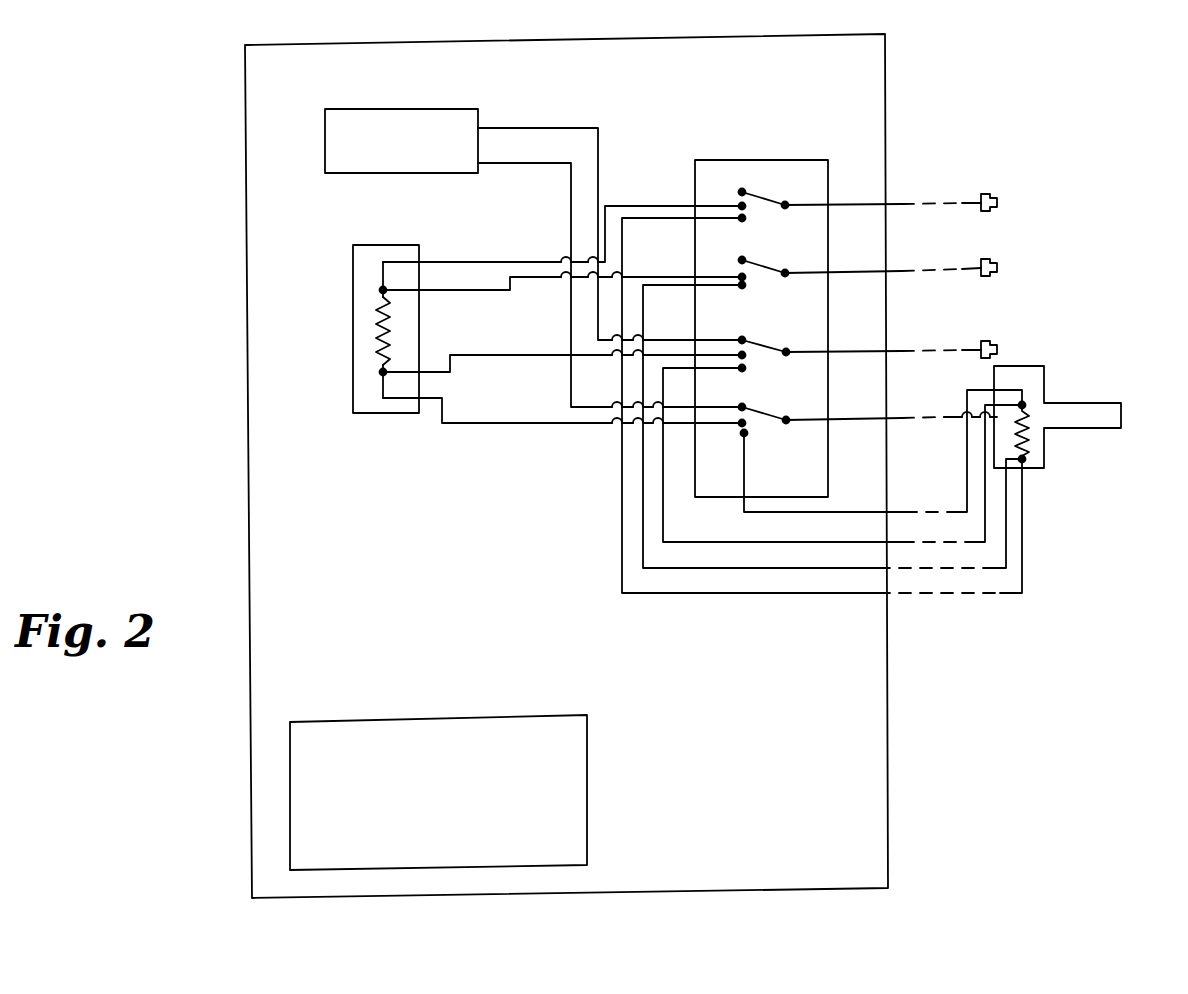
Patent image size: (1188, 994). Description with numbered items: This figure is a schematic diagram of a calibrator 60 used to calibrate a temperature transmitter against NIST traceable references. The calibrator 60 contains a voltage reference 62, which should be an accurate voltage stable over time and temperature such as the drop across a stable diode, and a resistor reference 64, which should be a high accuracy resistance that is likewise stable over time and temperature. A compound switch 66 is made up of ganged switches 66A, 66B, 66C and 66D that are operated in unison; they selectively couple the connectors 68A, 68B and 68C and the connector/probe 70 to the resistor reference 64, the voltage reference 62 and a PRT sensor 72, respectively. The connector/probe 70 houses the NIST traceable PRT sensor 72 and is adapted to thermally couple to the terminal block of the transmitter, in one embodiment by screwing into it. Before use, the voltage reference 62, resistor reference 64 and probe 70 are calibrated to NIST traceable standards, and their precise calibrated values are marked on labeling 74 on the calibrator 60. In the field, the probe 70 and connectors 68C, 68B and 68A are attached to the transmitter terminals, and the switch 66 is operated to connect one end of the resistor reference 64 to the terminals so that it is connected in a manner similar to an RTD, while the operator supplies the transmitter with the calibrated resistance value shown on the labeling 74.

The calibrator 60 is at (644, 466).
The voltage reference 62 is at (401, 120).
The resistor reference 64 is at (341, 329).
The compound switch 66 is at (761, 293).
The ganged switch 66A is at (782, 195).
The ganged switch 66B is at (779, 254).
The ganged switch 66C is at (787, 333).
The ganged switch 66D is at (785, 402).
The connector 68A is at (977, 170).
The connector 68B is at (1025, 244).
The connector 68C is at (1026, 323).
The connector/probe 70 is at (1057, 395).
The PRT sensor 72 is at (1075, 453).
The labeling 74 is at (453, 806).